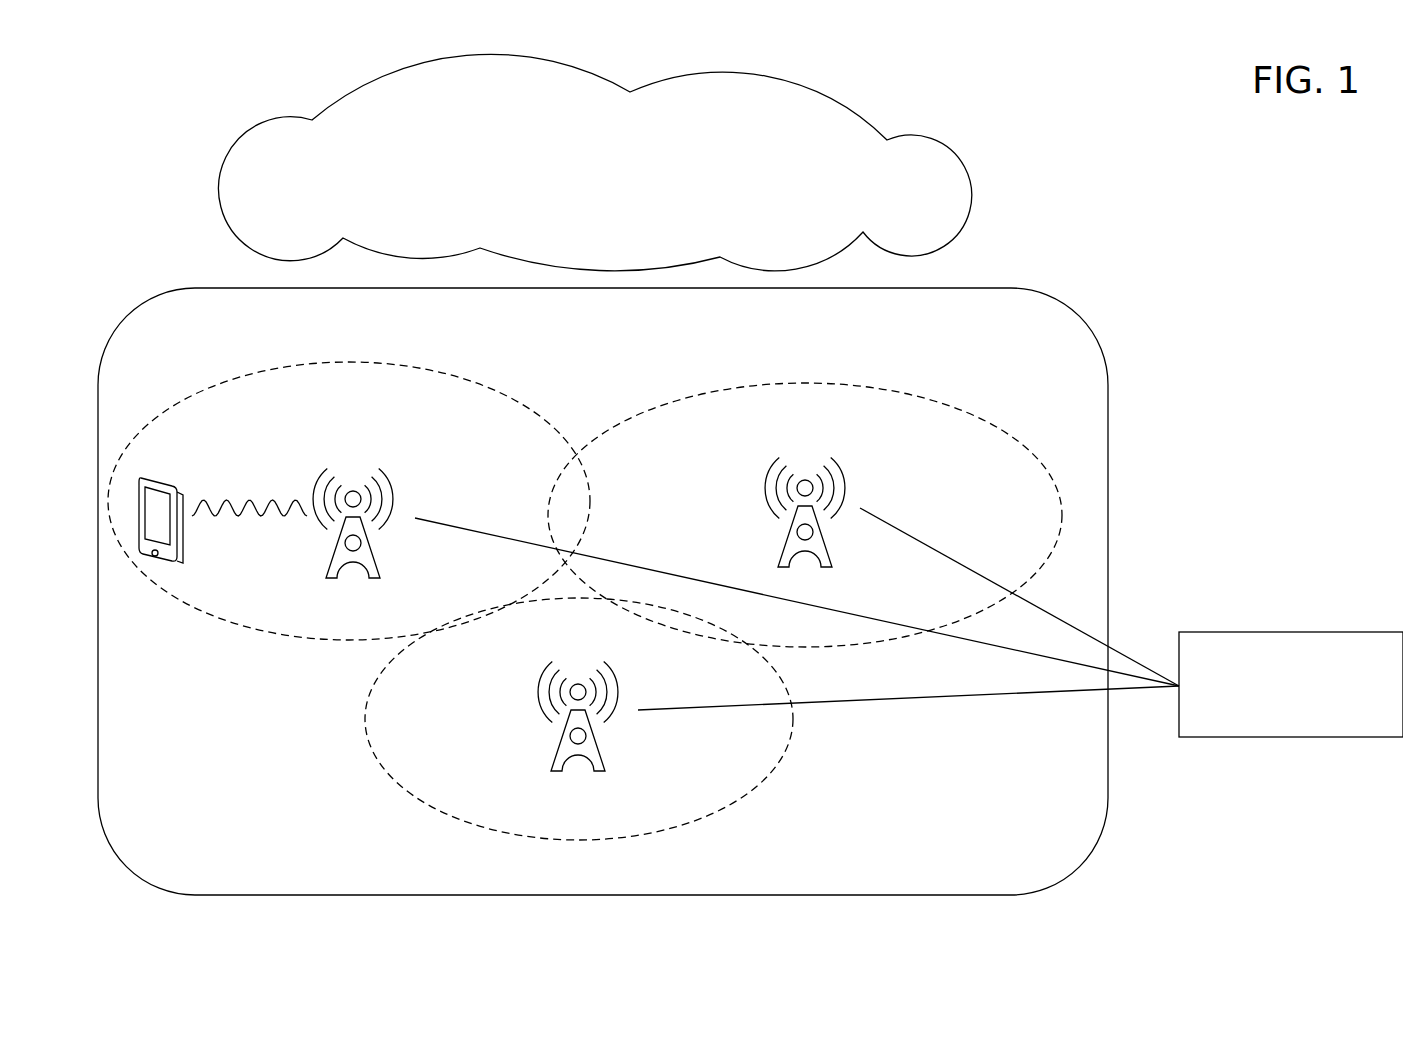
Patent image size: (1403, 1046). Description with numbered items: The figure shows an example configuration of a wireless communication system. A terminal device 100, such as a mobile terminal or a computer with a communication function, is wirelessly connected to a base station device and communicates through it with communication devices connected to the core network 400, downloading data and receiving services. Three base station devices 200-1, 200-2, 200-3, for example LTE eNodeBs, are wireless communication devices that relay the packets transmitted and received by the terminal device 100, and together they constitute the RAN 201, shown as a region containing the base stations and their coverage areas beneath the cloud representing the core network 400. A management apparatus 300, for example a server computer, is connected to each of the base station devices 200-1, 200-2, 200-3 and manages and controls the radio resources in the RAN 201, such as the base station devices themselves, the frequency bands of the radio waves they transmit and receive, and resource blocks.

The terminal device 100 is at (172, 484).
The base station device 200-1 is at (353, 490).
The base station device 200-2 is at (805, 479).
The base station device 200-3 is at (578, 683).
The RAN 201 is at (1026, 288).
The management apparatus 300 is at (1363, 632).
The core network 400 is at (728, 76).